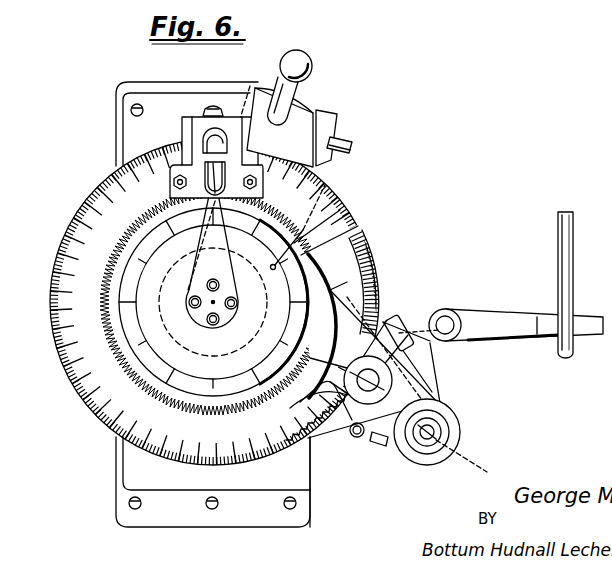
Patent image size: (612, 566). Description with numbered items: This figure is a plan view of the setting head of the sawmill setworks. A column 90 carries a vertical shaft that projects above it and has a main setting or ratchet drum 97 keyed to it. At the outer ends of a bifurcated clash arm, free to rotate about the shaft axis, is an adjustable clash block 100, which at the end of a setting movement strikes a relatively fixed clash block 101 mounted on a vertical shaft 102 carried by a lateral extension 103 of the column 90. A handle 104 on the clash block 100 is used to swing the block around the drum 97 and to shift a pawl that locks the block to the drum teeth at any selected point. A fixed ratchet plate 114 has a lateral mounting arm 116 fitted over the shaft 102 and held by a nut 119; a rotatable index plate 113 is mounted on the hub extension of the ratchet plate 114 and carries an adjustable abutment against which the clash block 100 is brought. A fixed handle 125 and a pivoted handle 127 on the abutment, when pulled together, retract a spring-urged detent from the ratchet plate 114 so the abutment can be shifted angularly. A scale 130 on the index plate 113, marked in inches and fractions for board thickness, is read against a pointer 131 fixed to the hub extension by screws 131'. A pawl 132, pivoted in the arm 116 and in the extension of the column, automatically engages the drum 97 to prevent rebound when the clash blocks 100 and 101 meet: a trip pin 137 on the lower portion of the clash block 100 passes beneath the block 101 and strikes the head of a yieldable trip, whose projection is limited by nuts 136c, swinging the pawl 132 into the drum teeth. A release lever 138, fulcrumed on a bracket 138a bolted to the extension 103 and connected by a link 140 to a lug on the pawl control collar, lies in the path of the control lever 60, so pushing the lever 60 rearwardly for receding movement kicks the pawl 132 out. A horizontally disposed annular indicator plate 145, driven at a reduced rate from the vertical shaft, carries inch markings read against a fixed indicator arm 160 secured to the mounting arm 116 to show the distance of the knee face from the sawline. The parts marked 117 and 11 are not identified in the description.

The axis line 11 is at (486, 468).
The control lever 60 is at (570, 280).
The column 90 is at (120, 462).
The ratchet drum 97 is at (306, 443).
The adjustable clash block 100 is at (318, 108).
The fixed clash block 101 is at (435, 357).
The vertical shaft 102 is at (461, 436).
The lateral extension 103 is at (388, 450).
The handle 104 is at (283, 72).
The index plate 113 is at (222, 241).
The fixed ratchet plate 114 is at (338, 214).
The lateral mounting arm 116 is at (455, 406).
The pivot 117 is at (372, 368).
The nut 119 is at (421, 440).
The fixed handle 125 is at (209, 112).
The pivoted handle 127 is at (210, 190).
The scale 130 is at (115, 255).
The pointer 131 is at (197, 293).
The screws 131' is at (194, 321).
The pawl 132 is at (343, 410).
The nuts 136c is at (354, 450).
The trip pin 137 is at (349, 144).
The release lever 138 is at (498, 315).
The bracket 138a is at (460, 300).
The link 140 is at (406, 320).
The annular indicator plate 145 is at (98, 391).
The fixed indicator arm 160 is at (352, 264).